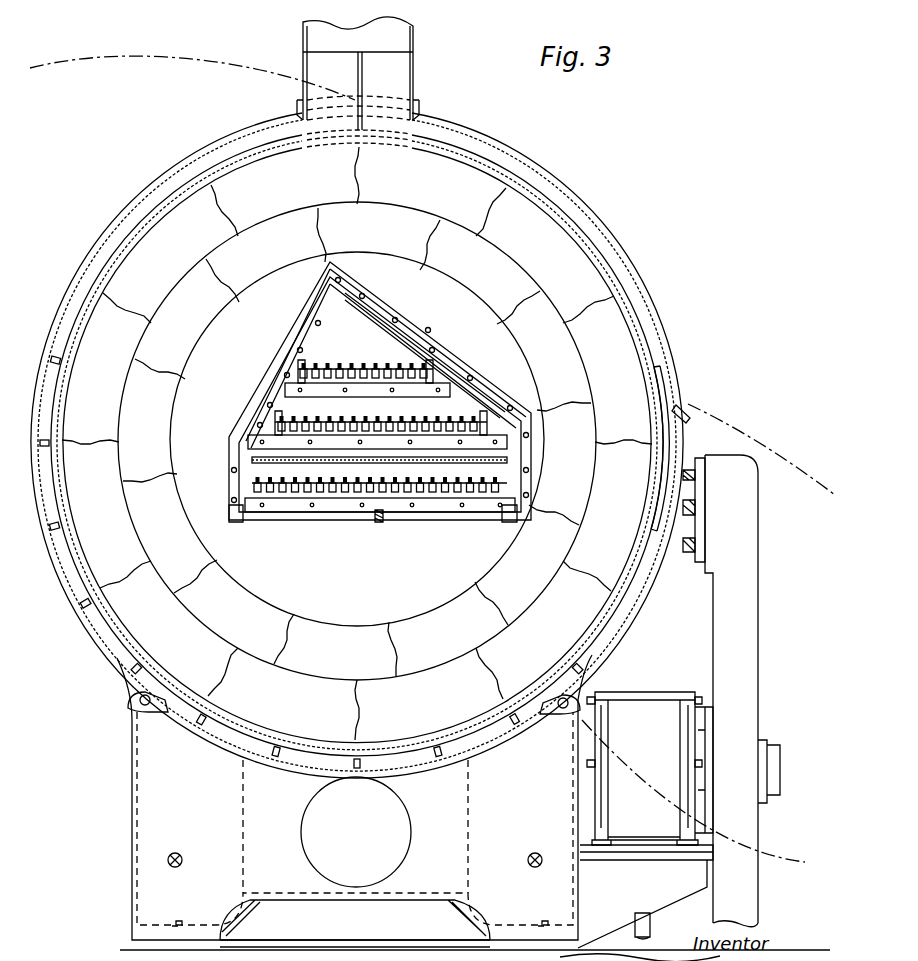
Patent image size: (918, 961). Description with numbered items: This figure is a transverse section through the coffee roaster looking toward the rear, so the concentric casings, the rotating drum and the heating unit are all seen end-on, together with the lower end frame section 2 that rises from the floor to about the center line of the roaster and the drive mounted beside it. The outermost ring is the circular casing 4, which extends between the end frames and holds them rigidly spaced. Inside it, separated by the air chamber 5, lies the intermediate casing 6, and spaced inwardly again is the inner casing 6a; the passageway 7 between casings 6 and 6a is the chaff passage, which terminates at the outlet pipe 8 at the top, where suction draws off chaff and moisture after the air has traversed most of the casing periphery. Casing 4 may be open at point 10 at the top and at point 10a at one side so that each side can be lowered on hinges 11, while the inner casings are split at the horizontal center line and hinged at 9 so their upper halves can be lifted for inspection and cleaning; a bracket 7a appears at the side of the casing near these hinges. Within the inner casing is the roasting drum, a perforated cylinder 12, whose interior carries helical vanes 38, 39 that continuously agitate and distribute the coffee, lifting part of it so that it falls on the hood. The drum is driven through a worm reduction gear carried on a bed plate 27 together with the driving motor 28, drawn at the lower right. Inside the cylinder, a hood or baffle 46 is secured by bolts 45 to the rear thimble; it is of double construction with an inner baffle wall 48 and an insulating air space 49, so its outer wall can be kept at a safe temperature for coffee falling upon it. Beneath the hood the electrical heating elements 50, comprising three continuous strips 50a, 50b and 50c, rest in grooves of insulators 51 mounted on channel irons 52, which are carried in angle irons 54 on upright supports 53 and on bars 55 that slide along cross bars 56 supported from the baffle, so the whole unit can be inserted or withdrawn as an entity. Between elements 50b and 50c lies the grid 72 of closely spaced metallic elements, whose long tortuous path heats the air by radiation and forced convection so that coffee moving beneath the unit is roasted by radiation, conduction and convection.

The lower end frame section 2 is at (132, 786).
The circular casing 4 is at (92, 252).
The air chamber 5 is at (122, 222).
The intermediate casing 6 is at (154, 200).
The inner casing 6a is at (208, 175).
The passageway 7 is at (180, 186).
The bracket 7a is at (660, 470).
The outlet pipe 8 is at (416, 52).
The hinge 9 is at (690, 446).
The top opening 10 is at (355, 97).
The side opening 10a is at (688, 412).
The hinge 11 is at (140, 706).
The perforated cylinder 12 is at (172, 205).
The bed plate 27 is at (668, 896).
The driving motor 28 is at (650, 696).
The helical vane 38 is at (357, 443).
The helical vane 39 is at (357, 442).
The bolt 45 is at (428, 328).
The hood or baffle 46 is at (285, 342).
The inner baffle wall 48 is at (368, 303).
The air space 49 is at (312, 322).
The electrical heating element 50 is at (376, 417).
The heating element 50a is at (363, 360).
The heating element 50b is at (377, 415).
The heating element 50c is at (376, 475).
The insulator 51 is at (322, 363).
The channel iron 52 is at (362, 394).
The upright support 53 is at (381, 417).
The angle iron 54 is at (370, 370).
The bar 55 is at (248, 520).
The cross bar 56 is at (362, 518).
The grid 72 is at (379, 467).